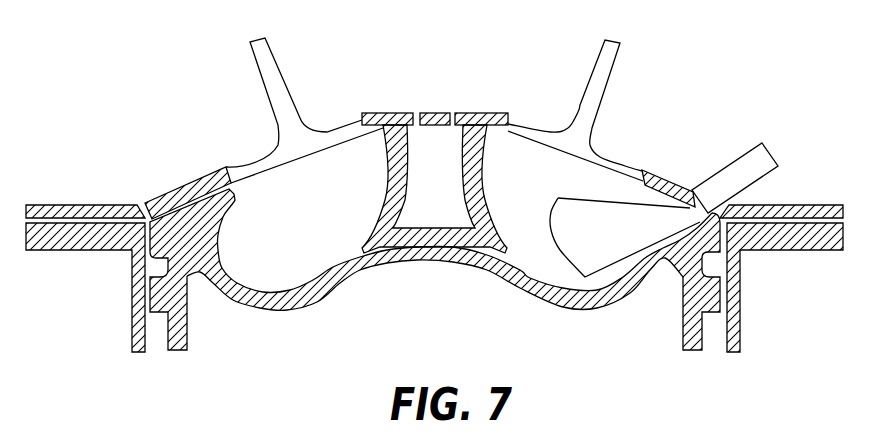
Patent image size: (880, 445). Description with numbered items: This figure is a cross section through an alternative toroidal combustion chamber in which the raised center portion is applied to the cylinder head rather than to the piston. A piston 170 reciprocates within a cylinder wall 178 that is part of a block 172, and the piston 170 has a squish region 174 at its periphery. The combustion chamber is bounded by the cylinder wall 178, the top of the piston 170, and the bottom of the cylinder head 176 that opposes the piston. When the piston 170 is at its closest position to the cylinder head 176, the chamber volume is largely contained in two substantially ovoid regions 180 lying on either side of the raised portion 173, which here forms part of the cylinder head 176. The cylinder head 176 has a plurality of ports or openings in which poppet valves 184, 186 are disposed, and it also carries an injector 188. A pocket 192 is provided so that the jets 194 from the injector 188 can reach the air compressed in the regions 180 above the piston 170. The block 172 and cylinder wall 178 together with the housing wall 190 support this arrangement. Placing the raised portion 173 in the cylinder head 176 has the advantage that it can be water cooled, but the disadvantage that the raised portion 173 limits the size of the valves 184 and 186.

The piston 170 is at (433, 255).
The block 172 is at (427, 287).
The raised portion 173 is at (453, 238).
The squish region 174 is at (187, 222).
The cylinder head 176 is at (98, 211).
The cylinder wall 178 is at (437, 325).
The ovoid regions 180 is at (313, 231).
The poppet valve 184 is at (272, 70).
The poppet valve 186 is at (592, 85).
The injector 188 is at (752, 162).
The housing wall 190 is at (85, 246).
The pocket 192 is at (680, 233).
The jets 194 is at (630, 237).